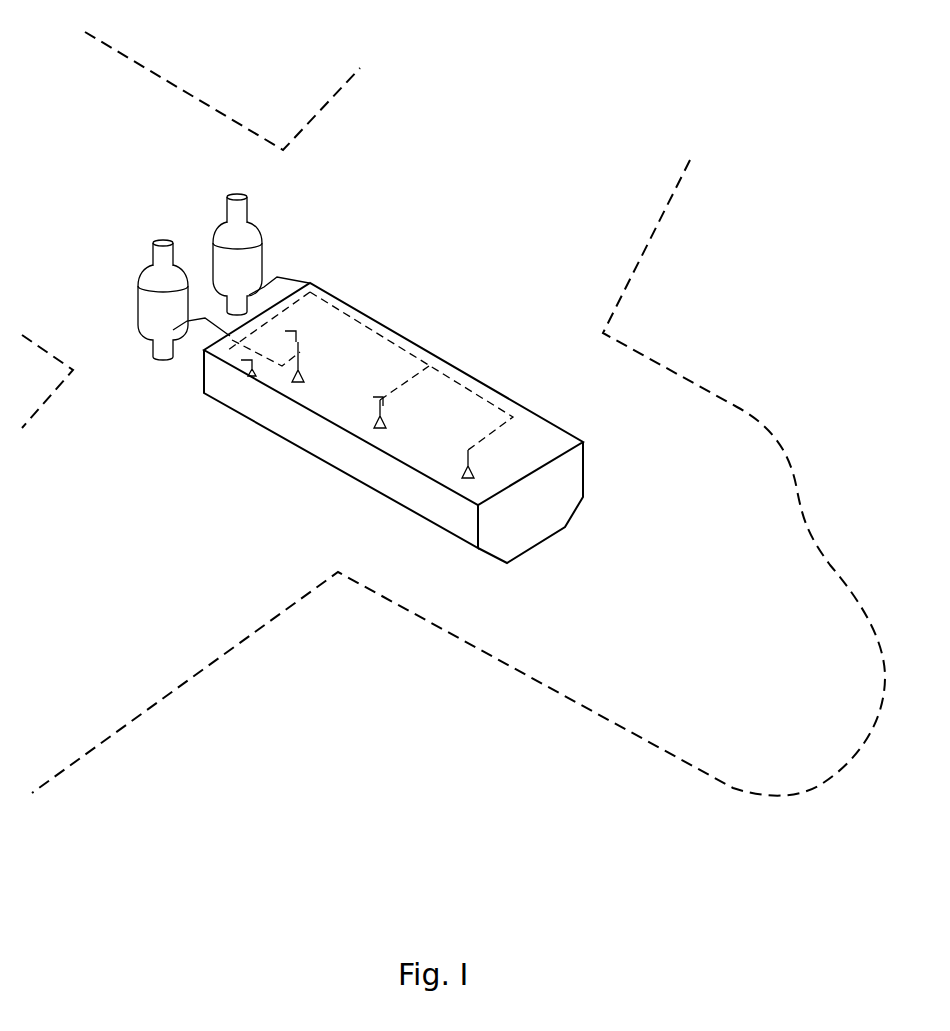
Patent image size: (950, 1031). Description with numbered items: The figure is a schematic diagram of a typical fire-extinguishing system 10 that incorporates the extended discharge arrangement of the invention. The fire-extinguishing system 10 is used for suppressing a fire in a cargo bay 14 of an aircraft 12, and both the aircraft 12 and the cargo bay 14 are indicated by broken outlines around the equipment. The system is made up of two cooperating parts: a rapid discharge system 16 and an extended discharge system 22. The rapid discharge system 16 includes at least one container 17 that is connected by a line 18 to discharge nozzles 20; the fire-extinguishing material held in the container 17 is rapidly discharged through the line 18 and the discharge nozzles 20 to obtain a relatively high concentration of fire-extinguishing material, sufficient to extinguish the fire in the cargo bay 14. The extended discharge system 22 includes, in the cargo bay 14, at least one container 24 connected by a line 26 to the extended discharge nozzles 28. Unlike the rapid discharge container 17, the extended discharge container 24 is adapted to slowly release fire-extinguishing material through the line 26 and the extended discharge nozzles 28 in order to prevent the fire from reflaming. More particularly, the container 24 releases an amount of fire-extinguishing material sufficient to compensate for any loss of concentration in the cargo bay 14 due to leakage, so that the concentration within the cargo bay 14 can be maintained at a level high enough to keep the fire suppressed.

The fire-extinguishing system 10 is at (421, 419).
The aircraft 12 is at (666, 345).
The cargo bay 14 is at (558, 427).
The rapid discharge system 16 is at (230, 165).
The container 17 is at (222, 234).
The line 18 is at (277, 278).
The discharge nozzles 20 is at (345, 305).
The extended discharge system 22 is at (138, 350).
The container 24 is at (156, 294).
The line 26 is at (424, 362).
The extended discharge nozzles 28 is at (376, 425).